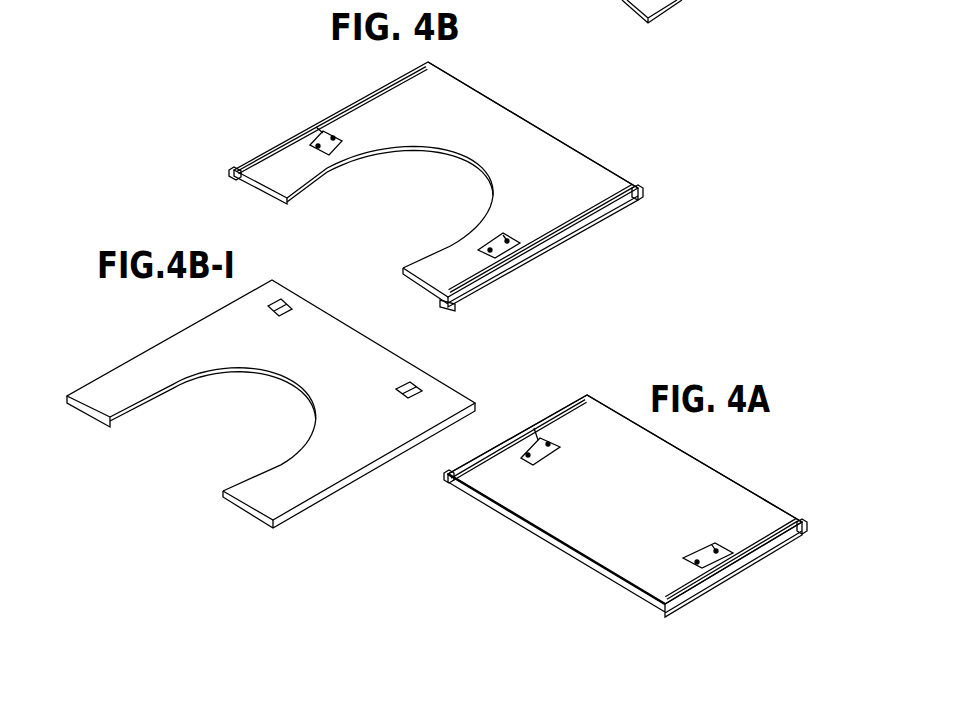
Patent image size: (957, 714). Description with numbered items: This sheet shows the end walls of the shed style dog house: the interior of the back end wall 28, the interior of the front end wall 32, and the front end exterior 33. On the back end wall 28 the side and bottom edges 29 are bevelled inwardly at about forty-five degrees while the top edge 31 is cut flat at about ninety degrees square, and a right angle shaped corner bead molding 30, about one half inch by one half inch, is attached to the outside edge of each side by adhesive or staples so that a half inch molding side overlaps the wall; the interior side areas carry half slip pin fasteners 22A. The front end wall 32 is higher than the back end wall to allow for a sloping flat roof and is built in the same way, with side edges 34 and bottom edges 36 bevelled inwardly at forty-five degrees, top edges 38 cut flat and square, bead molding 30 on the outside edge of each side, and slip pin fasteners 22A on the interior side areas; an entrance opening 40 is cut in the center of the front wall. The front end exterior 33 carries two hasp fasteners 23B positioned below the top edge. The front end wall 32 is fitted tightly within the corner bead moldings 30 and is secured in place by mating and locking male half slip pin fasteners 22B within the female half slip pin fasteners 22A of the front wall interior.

In FIG. 4B, the half slip pin fastener 22A is at (318, 138).
In FIG. 4A, the half slip pin fastener 22A is at (540, 438).
In FIG. 4B, the male half slip pin fastener 22B is at (700, 0).
In FIG. 4B-1, the hasp fastener 23B is at (290, 306).
In FIG. 4A, the back end wall 28 is at (757, 495).
In FIG. 4A, the side and bottom edges 29 is at (478, 459).
In FIG. 4B, the corner bead molding 30 is at (233, 170).
In FIG. 4A, the corner bead molding 30 is at (447, 476).
In FIG. 4A, the top edge 31 is at (625, 499).
In FIG. 4B, the front end wall 32 is at (607, 176).
In FIG. 4B-1, the front end exterior 33 is at (382, 347).
In FIG. 4B, the side edges 34 is at (368, 97).
In FIG. 4B, the bottom edges 36 is at (428, 290).
In FIG. 4B, the top edges 38 is at (552, 136).
In FIG. 4B, the entrance opening 40 is at (387, 207).